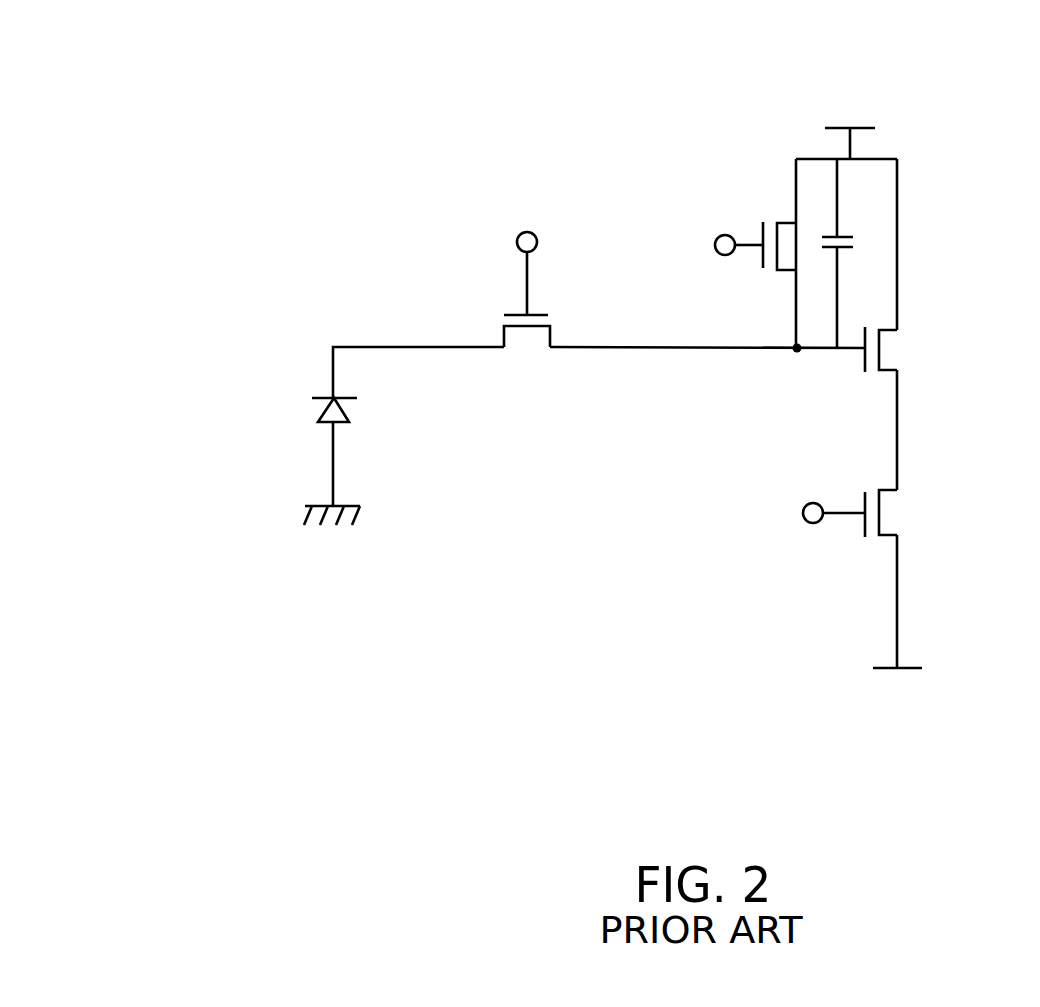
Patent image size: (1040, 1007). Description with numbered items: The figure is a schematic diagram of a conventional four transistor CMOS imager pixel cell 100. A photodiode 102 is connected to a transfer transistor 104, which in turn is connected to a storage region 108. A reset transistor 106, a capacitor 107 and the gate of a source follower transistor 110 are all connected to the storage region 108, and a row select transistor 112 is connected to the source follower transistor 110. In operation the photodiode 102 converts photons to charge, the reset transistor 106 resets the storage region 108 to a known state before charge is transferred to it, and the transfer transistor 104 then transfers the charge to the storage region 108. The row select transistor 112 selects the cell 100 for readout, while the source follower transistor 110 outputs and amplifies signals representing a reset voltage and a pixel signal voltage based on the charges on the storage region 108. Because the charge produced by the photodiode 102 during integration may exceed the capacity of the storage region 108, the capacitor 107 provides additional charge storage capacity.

The pixel cell 100 is at (960, 105).
The photodiode 102 is at (333, 397).
The transfer transistor 104 is at (504, 321).
The reset transistor 106 is at (770, 222).
The capacitor 107 is at (840, 236).
The storage region 108 is at (795, 352).
The source follower transistor 110 is at (873, 326).
The row select transistor 112 is at (873, 490).